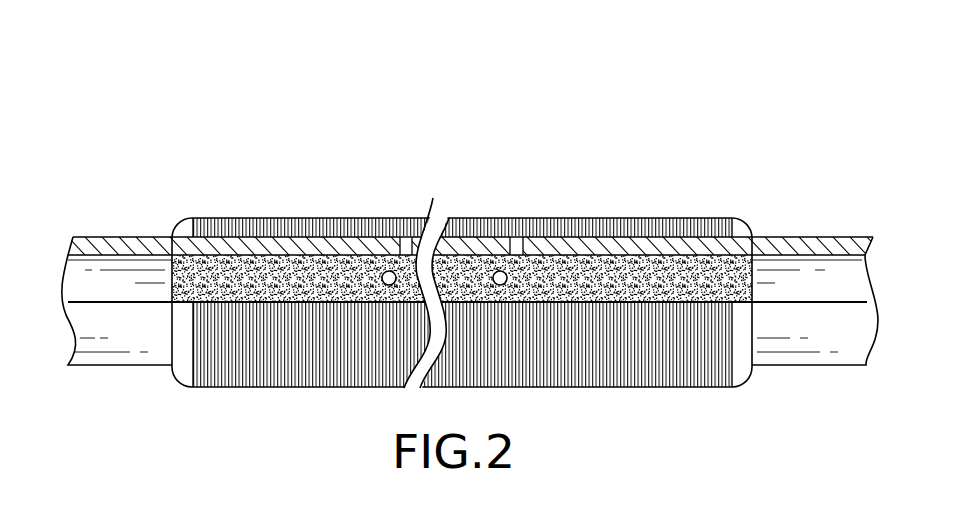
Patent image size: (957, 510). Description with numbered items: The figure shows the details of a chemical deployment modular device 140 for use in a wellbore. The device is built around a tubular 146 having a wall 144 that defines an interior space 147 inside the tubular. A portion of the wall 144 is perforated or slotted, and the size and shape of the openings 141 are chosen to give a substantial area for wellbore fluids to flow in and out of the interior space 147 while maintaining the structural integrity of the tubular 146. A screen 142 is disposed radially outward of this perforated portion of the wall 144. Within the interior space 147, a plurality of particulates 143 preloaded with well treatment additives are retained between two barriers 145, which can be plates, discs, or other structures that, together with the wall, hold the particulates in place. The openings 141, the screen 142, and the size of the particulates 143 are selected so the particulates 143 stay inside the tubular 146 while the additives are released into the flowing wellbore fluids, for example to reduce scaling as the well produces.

The chemical deployment modular device 140 is at (260, 147).
The openings 141 is at (380, 272).
The screen 142 is at (555, 228).
The particulates 143 is at (662, 276).
The wall 144 is at (782, 248).
The barriers 145 is at (168, 287).
The tubular 146 is at (861, 233).
The interior space 147 is at (457, 277).